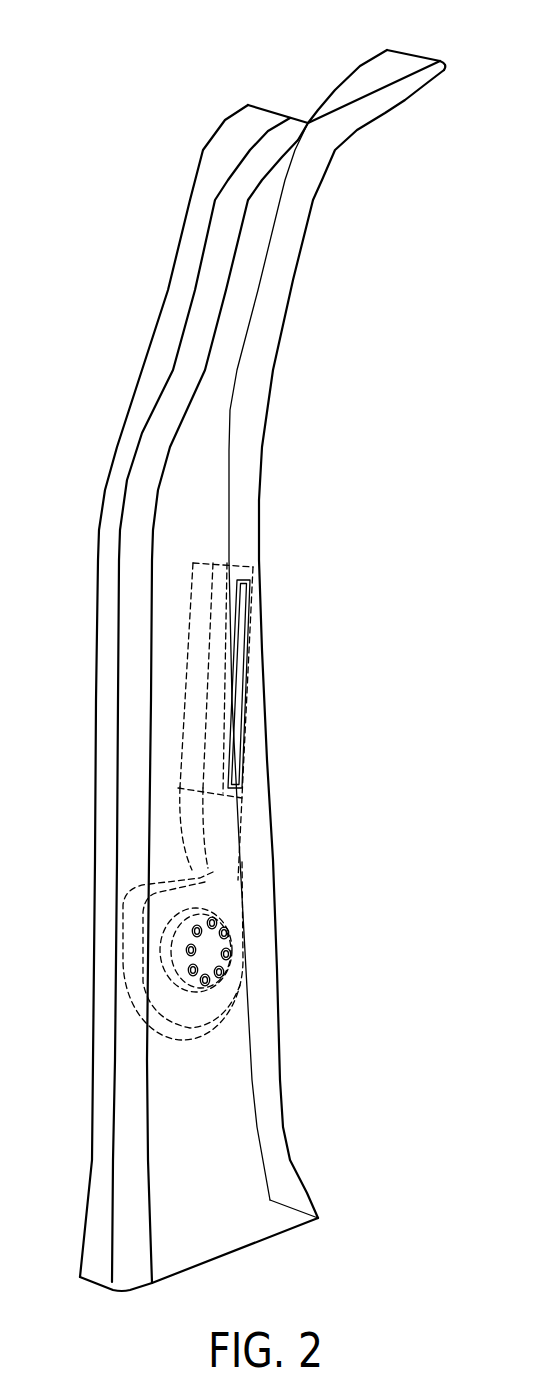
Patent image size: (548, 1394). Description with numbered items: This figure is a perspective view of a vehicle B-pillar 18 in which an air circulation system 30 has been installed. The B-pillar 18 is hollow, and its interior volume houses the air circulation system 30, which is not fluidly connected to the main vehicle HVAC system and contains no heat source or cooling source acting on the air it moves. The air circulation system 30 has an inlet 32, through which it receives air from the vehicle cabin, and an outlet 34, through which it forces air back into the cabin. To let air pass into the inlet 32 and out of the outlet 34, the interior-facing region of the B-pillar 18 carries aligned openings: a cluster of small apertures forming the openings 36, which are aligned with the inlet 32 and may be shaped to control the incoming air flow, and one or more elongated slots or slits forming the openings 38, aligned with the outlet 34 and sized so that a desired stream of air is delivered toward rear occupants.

The B-pillar 18 is at (365, 91).
The air circulation system 30 is at (232, 828).
The inlet 32 is at (173, 962).
The outlet 34 is at (226, 681).
The openings 36 is at (231, 953).
The openings 38 is at (246, 632).